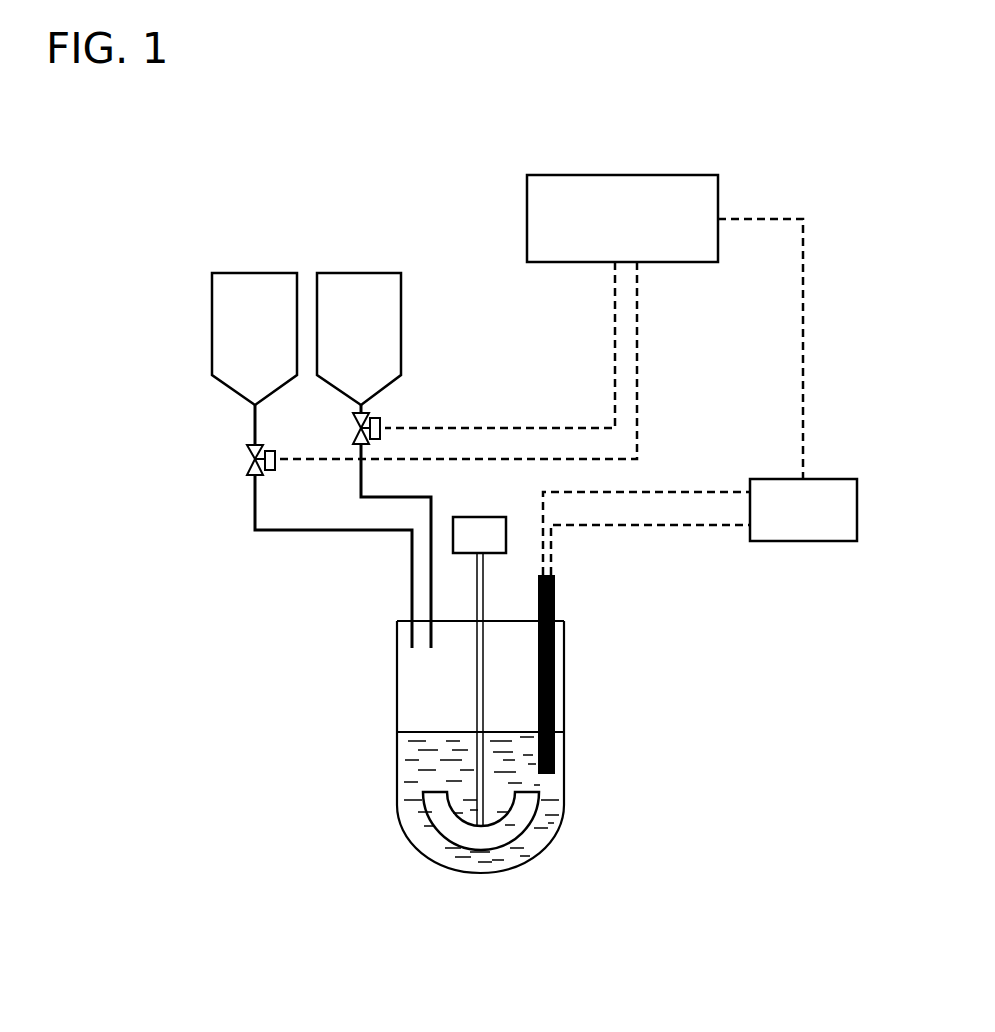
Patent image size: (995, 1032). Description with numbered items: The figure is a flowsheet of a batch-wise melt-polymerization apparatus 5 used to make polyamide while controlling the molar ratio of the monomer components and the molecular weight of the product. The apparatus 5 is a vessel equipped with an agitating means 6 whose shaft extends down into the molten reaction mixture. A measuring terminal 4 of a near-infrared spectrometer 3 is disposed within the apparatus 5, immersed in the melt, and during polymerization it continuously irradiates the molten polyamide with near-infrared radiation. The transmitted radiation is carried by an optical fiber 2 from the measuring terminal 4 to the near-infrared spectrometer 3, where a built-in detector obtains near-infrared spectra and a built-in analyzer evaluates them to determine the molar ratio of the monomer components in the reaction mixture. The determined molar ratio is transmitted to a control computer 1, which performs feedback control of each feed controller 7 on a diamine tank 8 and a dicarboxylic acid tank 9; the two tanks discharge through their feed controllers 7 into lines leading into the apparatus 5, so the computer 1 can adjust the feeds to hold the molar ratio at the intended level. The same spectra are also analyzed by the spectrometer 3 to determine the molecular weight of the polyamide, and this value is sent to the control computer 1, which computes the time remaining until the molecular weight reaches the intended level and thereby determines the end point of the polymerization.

The control computer 1 is at (622, 218).
The optical fiber 2 is at (598, 525).
The near-infrared spectrometer 3 is at (803, 510).
The measuring terminal 4 is at (555, 701).
The batch-wise melt-polymerization apparatus 5 is at (395, 695).
The agitating means 6 is at (481, 683).
The feed controller 7 is at (353, 430).
The diamine tank 8 is at (254, 339).
The dicarboxylic acid tank 9 is at (359, 339).